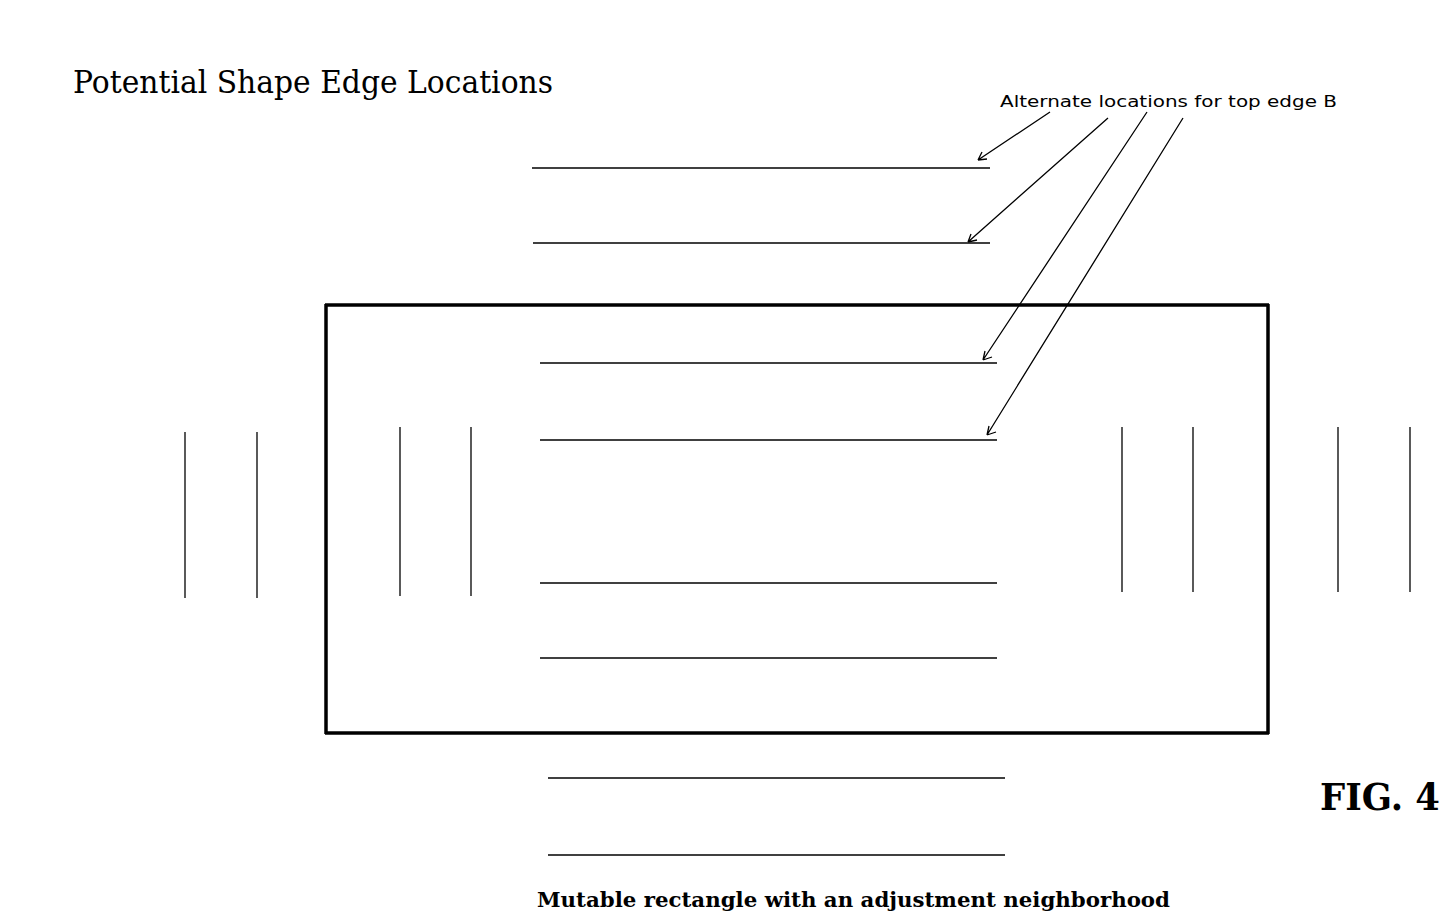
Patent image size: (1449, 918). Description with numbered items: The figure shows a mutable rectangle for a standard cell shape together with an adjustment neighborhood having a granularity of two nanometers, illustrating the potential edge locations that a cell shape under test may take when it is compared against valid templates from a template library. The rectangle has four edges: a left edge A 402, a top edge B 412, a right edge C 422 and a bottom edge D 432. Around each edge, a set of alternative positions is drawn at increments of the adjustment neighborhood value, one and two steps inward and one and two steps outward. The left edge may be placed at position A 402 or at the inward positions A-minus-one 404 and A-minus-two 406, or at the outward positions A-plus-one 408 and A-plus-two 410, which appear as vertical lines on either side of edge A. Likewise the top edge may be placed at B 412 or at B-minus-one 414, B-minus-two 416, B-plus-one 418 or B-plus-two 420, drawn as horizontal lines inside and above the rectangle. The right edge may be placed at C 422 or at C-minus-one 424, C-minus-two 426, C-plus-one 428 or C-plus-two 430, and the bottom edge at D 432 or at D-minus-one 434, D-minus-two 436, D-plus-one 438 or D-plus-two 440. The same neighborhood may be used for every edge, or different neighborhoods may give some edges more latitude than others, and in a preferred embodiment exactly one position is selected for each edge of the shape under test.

The left edge position A 402 is at (296, 752).
The left edge position (A−1) 404 is at (398, 382).
The left edge position (A−2) 406 is at (472, 382).
The left edge position (A+1) 408 is at (253, 378).
The left edge position (A+2) 410 is at (182, 378).
The top edge position B 412 is at (372, 262).
The top edge position (B−1) 414 is at (676, 341).
The top edge position (B−2) 416 is at (676, 419).
The top edge position (B+1) 418 is at (600, 224).
The top edge position (B+2) 420 is at (602, 150).
The right edge position C 422 is at (1294, 330).
The right edge position (C−1) 424 is at (1188, 377).
The right edge position (C−2) 426 is at (1117, 377).
The right edge position (C+1) 428 is at (1338, 377).
The right edge position (C+2) 430 is at (1409, 377).
The bottom edge position D 432 is at (1224, 814).
The bottom edge position (D−1) 434 is at (684, 640).
The bottom edge position (D−2) 436 is at (682, 562).
The bottom edge position (D+1) 438 is at (608, 762).
The bottom edge position (D+2) 440 is at (608, 836).